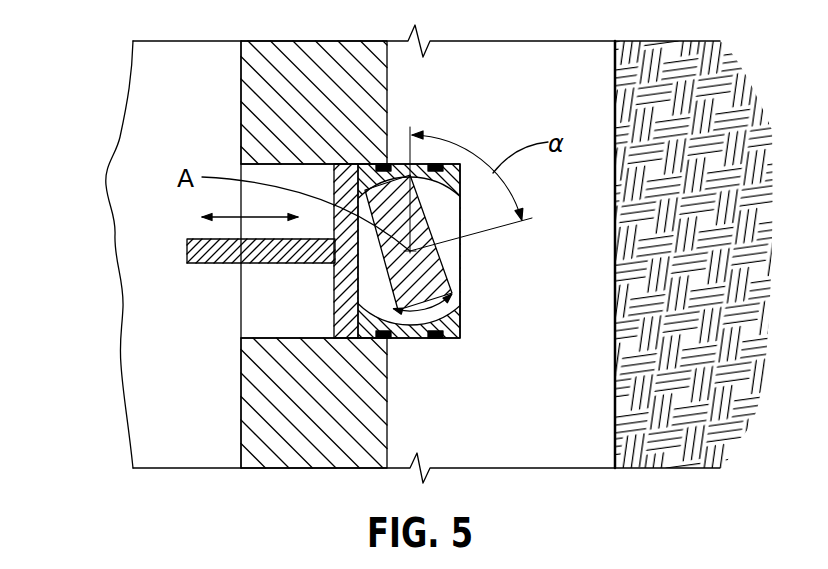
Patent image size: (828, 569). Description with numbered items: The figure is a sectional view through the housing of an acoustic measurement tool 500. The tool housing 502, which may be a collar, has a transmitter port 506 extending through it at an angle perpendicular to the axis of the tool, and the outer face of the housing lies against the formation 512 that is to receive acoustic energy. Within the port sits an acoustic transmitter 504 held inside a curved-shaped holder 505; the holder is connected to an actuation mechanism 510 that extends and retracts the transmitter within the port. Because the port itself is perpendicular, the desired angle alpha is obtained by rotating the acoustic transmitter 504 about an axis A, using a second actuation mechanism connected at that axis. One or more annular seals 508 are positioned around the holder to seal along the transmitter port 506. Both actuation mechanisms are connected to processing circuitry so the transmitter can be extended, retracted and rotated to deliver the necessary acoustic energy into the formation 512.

The acoustic measurement tool 500 is at (478, 113).
The tool housing 502 is at (240, 115).
The acoustic transmitter 504 is at (433, 275).
The curved-shaped holder 505 is at (462, 328).
The transmitter port 506 is at (267, 337).
The annular seals 508 is at (382, 362).
The actuation mechanism 510 is at (215, 267).
The formation 512 is at (720, 208).